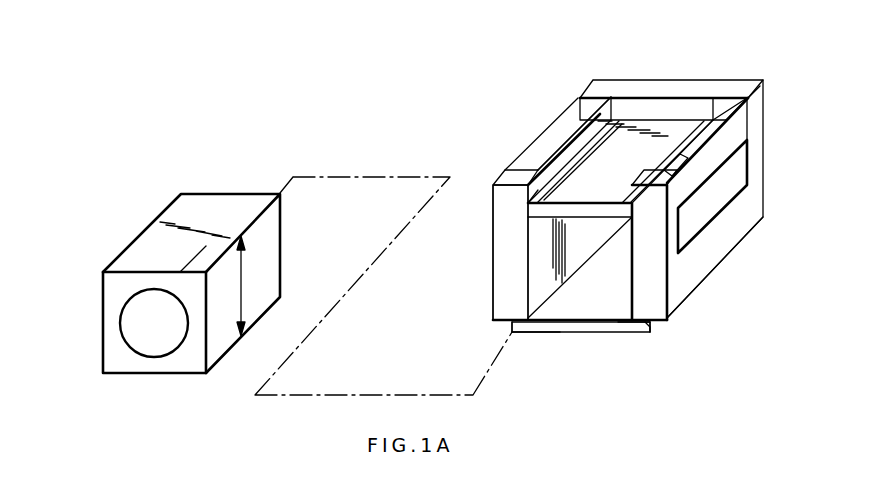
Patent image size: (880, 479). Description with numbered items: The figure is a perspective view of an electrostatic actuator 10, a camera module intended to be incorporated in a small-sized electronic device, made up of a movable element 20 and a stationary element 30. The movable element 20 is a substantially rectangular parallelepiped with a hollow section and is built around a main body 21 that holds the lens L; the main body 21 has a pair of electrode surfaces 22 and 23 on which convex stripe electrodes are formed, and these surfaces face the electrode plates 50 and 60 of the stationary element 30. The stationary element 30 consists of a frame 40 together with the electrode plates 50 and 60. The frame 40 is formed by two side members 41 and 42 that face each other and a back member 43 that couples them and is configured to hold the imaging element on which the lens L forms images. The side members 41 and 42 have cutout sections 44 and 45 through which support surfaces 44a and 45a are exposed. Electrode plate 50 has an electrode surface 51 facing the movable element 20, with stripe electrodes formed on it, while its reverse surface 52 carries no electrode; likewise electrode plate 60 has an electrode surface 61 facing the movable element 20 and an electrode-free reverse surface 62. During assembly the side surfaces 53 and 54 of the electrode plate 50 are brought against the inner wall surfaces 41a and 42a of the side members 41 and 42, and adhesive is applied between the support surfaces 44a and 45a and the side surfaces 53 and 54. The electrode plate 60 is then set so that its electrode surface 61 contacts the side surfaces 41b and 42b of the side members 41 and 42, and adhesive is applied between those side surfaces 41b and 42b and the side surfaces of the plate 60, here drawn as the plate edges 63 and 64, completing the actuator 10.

The electrostatic actuator 10 is at (705, 78).
The movable element 20 is at (153, 376).
The main body 21 is at (127, 238).
The electrode surface 22 is at (208, 197).
The electrode surface 23 is at (240, 346).
The lens L is at (121, 323).
The stationary element 30 is at (747, 242).
The frame 40 is at (492, 238).
The side member 41 is at (505, 248).
The inner wall surface 41a is at (535, 277).
The side surface 41b is at (497, 323).
The side member 42 is at (712, 262).
The inner wall surface 42a is at (628, 256).
The side surface 42b is at (655, 325).
The back member 43 is at (743, 88).
The cutout section 44 is at (530, 167).
The support surface 44a is at (571, 127).
The cutout section 45 is at (740, 115).
The support surface 45a is at (695, 158).
The electrode plate 50 is at (580, 167).
The electrode surface 51 is at (533, 228).
The reverse surface 52 is at (636, 120).
The side surface 53 is at (588, 128).
The side surface 54 is at (680, 143).
The electrode plate 60 is at (587, 335).
The electrode surface 61 is at (618, 312).
The reverse surface 62 is at (548, 335).
The base left corner 63 is at (510, 327).
The base right corner 64 is at (653, 330).